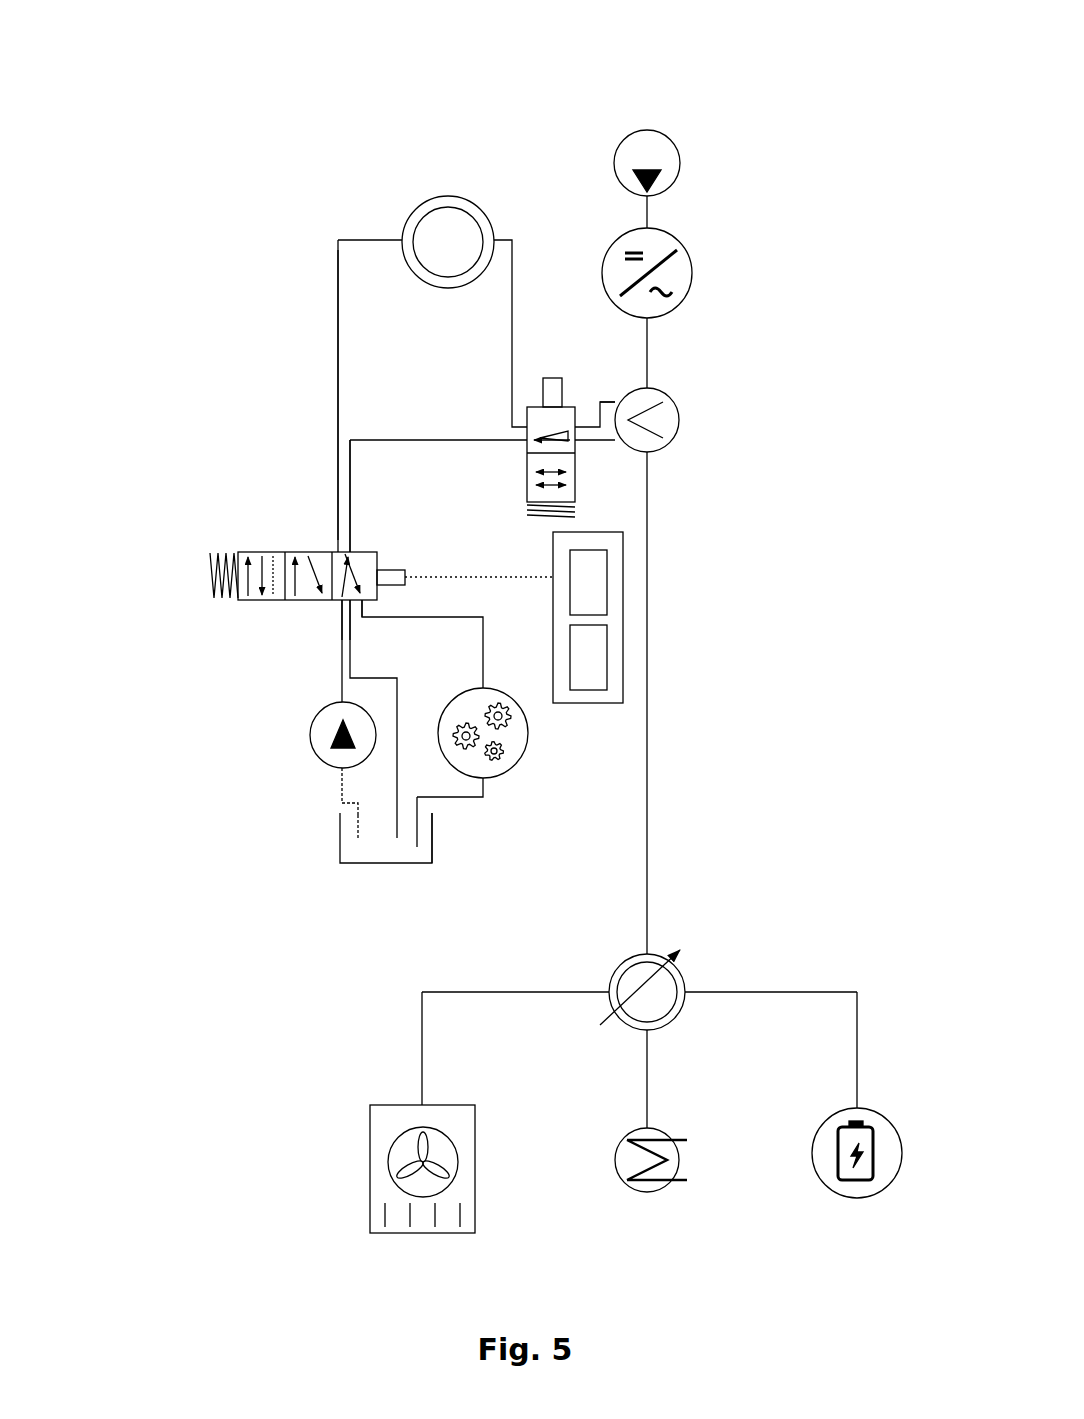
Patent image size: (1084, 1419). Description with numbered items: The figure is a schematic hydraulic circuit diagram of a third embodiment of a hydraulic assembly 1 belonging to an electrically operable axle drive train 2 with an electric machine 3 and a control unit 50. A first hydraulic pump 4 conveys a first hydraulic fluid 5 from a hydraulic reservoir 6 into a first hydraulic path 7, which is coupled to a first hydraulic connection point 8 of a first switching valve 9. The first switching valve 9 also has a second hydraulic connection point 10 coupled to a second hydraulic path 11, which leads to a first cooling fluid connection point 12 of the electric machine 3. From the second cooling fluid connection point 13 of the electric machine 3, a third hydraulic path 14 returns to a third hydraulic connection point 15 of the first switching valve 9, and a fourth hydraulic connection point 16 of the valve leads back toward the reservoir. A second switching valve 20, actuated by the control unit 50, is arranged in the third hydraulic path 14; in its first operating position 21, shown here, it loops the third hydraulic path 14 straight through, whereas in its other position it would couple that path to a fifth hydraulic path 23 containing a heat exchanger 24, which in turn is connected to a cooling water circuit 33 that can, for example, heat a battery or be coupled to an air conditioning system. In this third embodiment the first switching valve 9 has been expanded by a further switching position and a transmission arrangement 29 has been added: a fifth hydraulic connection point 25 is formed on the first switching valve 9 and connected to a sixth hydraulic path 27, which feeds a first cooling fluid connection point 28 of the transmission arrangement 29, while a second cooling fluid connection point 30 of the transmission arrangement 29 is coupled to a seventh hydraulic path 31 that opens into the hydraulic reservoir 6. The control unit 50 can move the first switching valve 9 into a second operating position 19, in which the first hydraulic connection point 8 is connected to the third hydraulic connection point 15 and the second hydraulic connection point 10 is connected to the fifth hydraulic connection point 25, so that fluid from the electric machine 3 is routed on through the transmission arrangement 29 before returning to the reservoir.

The hydraulic assembly 1 is at (295, 168).
The electrically operable axle drive train 2 is at (148, 80).
The electric machine 3 is at (452, 196).
The first hydraulic pump 4 is at (310, 740).
The first hydraulic fluid 5 is at (375, 842).
The hydraulic reservoir 6 is at (432, 845).
The first hydraulic path 7 is at (340, 682).
The first hydraulic connection point 8 is at (335, 600).
The first switching valve 9 is at (200, 576).
The second hydraulic connection point 10 is at (333, 548).
The second hydraulic path 11 is at (337, 347).
The first cooling fluid connection point 12 is at (393, 238).
The second cooling fluid connection point 13 is at (495, 242).
The third hydraulic path 14 is at (490, 432).
The third hydraulic connection point 15 is at (353, 546).
The fourth hydraulic connection point 16 is at (340, 602).
The second operating position 19 is at (323, 522).
The second switching valve 20 is at (552, 358).
The first operating position 21 is at (593, 380).
The fifth hydraulic path 23 is at (603, 445).
The heat exchanger 24 is at (680, 417).
The fifth hydraulic connection point 25 is at (363, 607).
The sixth hydraulic path 27 is at (483, 633).
The first cooling fluid connection point 28 is at (483, 683).
The transmission arrangement 29 is at (530, 735).
The second cooling fluid connection point 30 is at (483, 782).
The seventh hydraulic path 31 is at (463, 802).
The cooling water circuit 33 is at (647, 840).
The control unit 50 is at (623, 647).